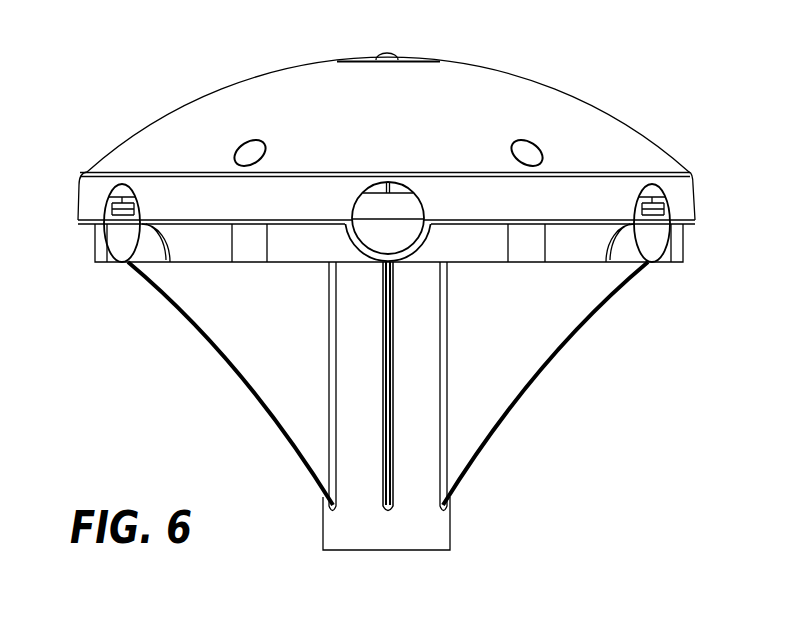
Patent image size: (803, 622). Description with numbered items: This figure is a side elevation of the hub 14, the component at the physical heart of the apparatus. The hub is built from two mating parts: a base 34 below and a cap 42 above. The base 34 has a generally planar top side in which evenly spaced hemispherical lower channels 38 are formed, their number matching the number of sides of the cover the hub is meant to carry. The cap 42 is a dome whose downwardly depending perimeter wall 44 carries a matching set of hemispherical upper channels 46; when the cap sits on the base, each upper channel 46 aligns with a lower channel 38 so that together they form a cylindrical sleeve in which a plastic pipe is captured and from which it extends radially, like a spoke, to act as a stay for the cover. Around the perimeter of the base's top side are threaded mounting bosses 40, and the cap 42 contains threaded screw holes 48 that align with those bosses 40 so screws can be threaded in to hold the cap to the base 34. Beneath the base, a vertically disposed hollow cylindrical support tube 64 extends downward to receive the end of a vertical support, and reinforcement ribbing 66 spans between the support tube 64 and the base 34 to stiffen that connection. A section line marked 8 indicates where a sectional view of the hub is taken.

The section line 8- 8 is at (387, 72).
The hub 14 is at (548, 57).
The base 34 is at (102, 258).
The hemispherical lower channels 38 is at (128, 235).
The threaded mounting bosses 40 is at (245, 240).
The cap 42 is at (640, 152).
The perimeter wall 44 is at (87, 203).
The hemispherical upper channels 46 is at (387, 198).
The threaded screw holes 48 is at (247, 153).
The support tube 64 is at (438, 527).
The reinforcement ribbing 66 is at (253, 363).